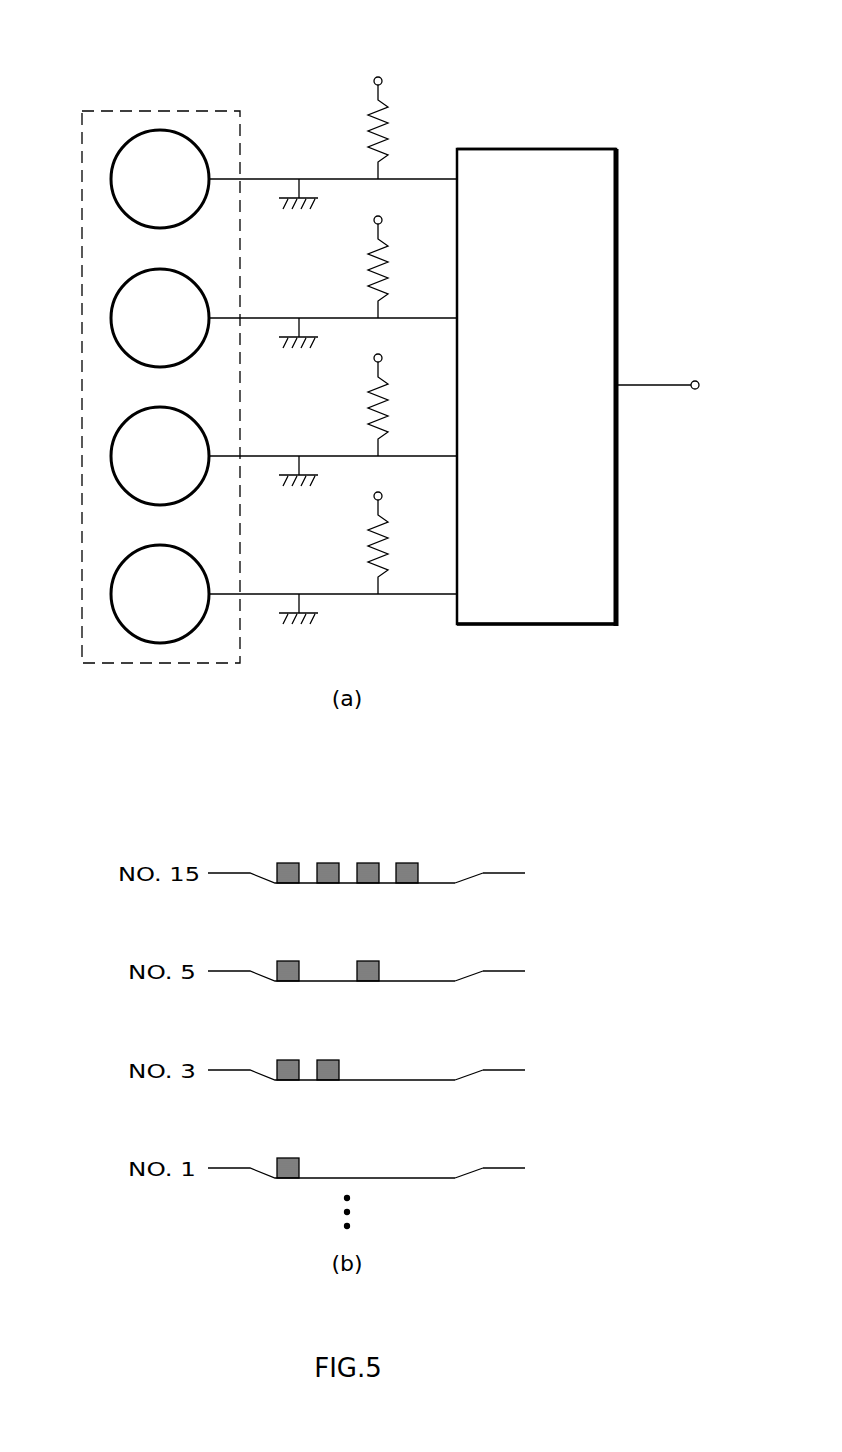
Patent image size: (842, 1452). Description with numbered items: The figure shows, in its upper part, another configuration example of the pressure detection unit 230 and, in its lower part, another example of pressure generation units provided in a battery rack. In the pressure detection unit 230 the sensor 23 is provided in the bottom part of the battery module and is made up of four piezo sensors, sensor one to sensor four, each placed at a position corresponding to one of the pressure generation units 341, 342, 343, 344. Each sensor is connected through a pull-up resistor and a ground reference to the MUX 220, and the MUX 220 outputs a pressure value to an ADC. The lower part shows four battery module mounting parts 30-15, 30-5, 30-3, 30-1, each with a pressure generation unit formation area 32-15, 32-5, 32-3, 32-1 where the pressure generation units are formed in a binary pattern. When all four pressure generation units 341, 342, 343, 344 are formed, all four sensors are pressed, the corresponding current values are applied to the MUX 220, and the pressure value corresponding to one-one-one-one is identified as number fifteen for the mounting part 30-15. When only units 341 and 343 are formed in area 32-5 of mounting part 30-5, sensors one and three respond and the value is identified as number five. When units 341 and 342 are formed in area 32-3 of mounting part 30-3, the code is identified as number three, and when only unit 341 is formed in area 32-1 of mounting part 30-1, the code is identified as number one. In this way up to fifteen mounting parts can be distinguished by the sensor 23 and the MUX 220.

The sensor 23 is at (158, 110).
The MUX 220 is at (534, 148).
The pressure detection unit 230 is at (625, 82).
The pressure generation unit 341 is at (286, 862).
The pressure generation unit 342 is at (327, 862).
The pressure generation unit 343 is at (366, 862).
The pressure generation unit 344 is at (406, 862).
The pressure generation unit formation area 32-15 is at (444, 878).
The battery module mounting part 30-15 is at (505, 871).
The pressure generation unit formation area 32-5 is at (443, 976).
The battery module mounting part 30-5 is at (505, 969).
The pressure generation unit formation area 32-3 is at (443, 1075).
The battery module mounting part 30-3 is at (505, 1068).
The pressure generation unit formation area 32-1 is at (443, 1173).
The battery module mounting part 30-1 is at (505, 1166).